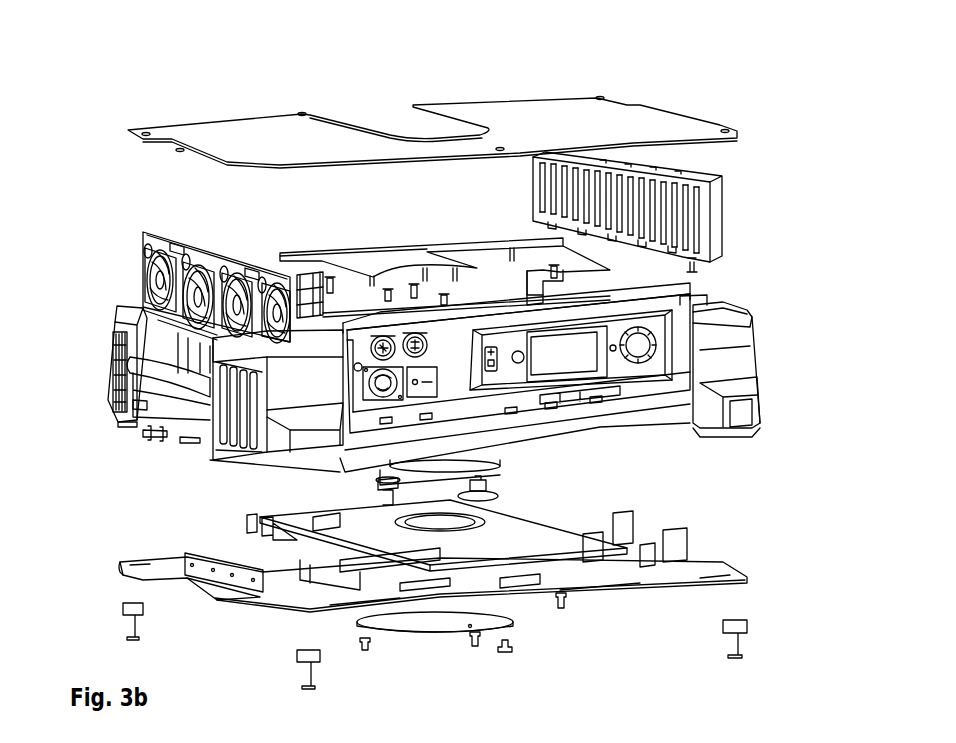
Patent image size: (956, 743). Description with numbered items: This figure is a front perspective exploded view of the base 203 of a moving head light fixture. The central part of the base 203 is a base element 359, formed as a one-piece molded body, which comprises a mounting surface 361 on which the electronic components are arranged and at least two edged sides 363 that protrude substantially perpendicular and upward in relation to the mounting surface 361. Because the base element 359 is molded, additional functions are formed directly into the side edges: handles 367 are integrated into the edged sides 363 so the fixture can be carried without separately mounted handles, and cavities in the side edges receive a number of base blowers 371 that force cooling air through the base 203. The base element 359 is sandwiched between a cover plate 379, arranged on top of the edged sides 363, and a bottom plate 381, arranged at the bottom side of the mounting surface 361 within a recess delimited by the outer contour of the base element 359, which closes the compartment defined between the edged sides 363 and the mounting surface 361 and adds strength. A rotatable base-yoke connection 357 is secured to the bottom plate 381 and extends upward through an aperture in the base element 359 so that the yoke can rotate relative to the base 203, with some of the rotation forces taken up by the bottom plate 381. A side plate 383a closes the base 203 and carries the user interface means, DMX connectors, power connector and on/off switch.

The base 203 is at (190, 62).
The cover plate 379 is at (540, 113).
The base blowers 371 is at (203, 242).
The side plate 383a is at (403, 250).
The edged sides 363 is at (128, 320).
The base element 359 is at (747, 287).
The handles 367 is at (172, 446).
The base-yoke connection 357 is at (375, 480).
The mounting surface 361 is at (527, 407).
The bottom plate 381 is at (295, 612).